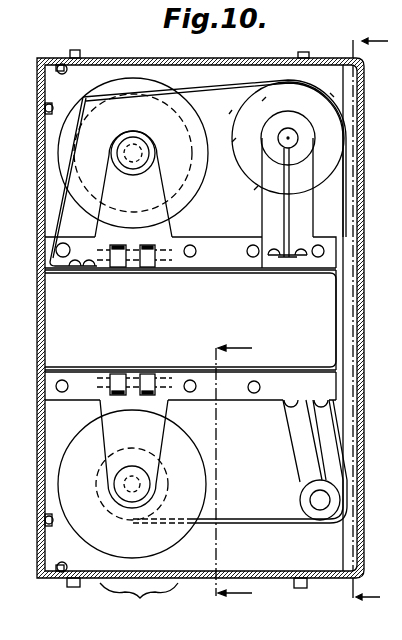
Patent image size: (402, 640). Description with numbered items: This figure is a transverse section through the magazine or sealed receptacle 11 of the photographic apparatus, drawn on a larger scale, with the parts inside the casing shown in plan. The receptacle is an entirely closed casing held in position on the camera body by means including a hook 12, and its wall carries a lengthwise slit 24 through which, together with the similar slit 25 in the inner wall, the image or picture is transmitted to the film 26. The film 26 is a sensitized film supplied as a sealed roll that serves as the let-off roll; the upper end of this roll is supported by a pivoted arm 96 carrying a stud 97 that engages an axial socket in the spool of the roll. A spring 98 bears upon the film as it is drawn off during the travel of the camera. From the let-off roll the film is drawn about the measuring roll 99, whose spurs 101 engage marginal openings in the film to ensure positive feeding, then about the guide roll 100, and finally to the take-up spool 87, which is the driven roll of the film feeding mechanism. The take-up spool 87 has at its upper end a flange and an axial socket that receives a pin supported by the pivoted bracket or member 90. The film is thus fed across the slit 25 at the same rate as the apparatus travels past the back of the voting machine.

The magazine or sealed receptacle 11 is at (244, 321).
The hook 12 is at (226, 474).
The lengthwise slit 24 is at (52, 324).
The slit 25 is at (335, 319).
The film 26 is at (247, 519).
The take-up spool 87 is at (100, 468).
The pivoted bracket or member 90 is at (153, 436).
The pivoted arm 96 is at (158, 232).
The stud 97 is at (132, 135).
The spring 98 is at (63, 210).
The measuring roll 99 is at (251, 115).
The guide roll 100 is at (320, 503).
The spurs 101 is at (248, 176).